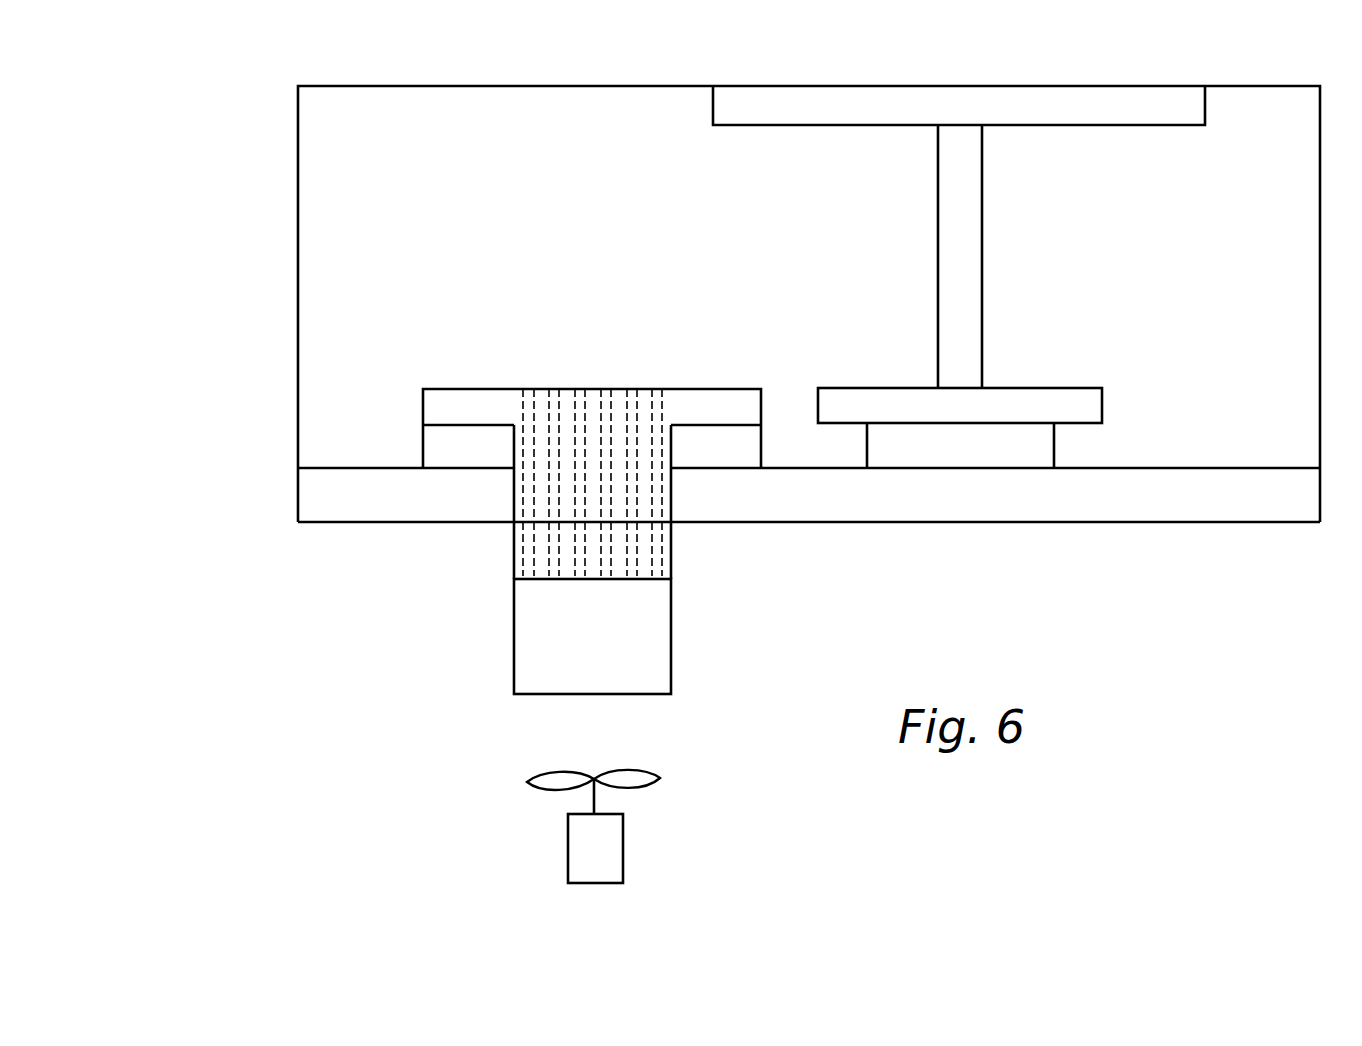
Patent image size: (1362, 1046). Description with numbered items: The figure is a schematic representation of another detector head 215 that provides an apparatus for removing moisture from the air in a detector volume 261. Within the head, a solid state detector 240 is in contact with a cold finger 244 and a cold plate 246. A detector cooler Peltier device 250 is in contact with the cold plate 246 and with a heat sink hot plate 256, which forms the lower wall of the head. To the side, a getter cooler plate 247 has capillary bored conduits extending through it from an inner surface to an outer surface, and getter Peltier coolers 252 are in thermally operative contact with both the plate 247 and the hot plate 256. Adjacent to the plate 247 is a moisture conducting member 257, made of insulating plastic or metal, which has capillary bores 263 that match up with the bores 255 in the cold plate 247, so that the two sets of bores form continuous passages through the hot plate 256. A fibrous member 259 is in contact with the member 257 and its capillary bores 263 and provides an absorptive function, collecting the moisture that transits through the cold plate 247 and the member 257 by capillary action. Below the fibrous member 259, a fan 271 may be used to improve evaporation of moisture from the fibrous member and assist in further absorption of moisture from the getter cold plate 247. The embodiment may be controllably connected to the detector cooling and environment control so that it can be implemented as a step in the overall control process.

The detector head 215 is at (220, 146).
The solid state detector 240 is at (1100, 125).
The cold finger 244 is at (982, 302).
The cold plate 246 is at (1102, 402).
The detector cooler Peltier device 250 is at (1054, 447).
The getter cooler plate 247 is at (442, 389).
The getter Peltier coolers 252 is at (423, 448).
The capillary bores 255 is at (600, 420).
The heat sink hot plate 256 is at (299, 500).
The moisture conducting member 257 is at (671, 540).
The fibrous member 259 is at (671, 625).
The detector volume 261 is at (547, 239).
The capillary bores 263 is at (527, 551).
The fan 271 is at (623, 851).